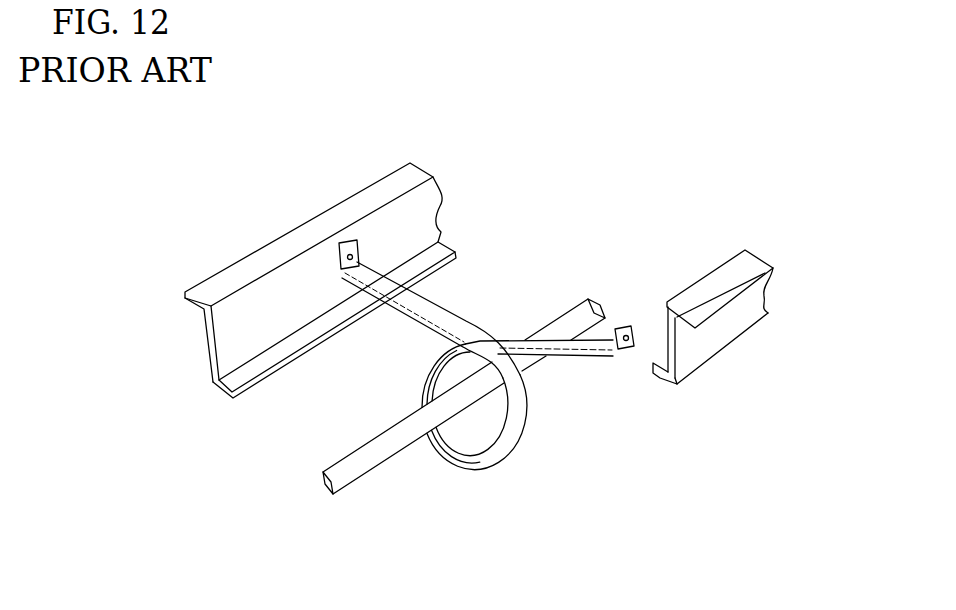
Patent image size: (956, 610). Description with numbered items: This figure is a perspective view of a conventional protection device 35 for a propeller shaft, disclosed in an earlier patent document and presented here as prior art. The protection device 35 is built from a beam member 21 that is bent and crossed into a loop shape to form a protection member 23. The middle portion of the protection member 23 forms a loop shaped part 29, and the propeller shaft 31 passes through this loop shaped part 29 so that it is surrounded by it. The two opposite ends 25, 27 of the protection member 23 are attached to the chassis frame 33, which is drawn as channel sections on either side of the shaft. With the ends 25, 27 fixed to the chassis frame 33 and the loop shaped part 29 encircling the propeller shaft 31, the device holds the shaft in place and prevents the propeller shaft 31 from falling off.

The beam member 21 is at (416, 309).
The protection member 23 is at (463, 315).
The end of protection member 25 is at (627, 330).
The end of protection member 27 is at (357, 242).
The loop shaped part 29 is at (453, 468).
The propeller shaft 31 is at (325, 490).
The chassis frame 33 is at (252, 303).
The protection device 35 is at (458, 199).